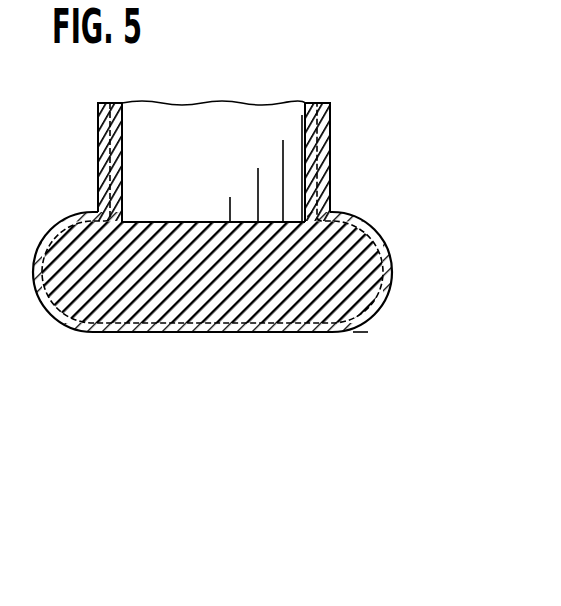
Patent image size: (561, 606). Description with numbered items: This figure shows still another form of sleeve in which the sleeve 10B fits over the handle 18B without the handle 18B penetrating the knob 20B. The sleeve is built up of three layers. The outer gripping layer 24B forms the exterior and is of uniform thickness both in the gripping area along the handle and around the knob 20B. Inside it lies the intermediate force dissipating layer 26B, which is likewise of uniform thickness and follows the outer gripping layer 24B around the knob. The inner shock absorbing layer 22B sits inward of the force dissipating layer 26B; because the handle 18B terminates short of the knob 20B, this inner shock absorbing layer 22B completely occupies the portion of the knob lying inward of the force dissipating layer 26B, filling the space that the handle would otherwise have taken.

The sleeve 10B is at (340, 118).
The handle 18B is at (270, 164).
The knob 20B is at (391, 292).
The inner shock absorbing layer 22B is at (186, 285).
The outer gripping layer 24B is at (323, 331).
The intermediate force dissipating layer 26B is at (378, 232).